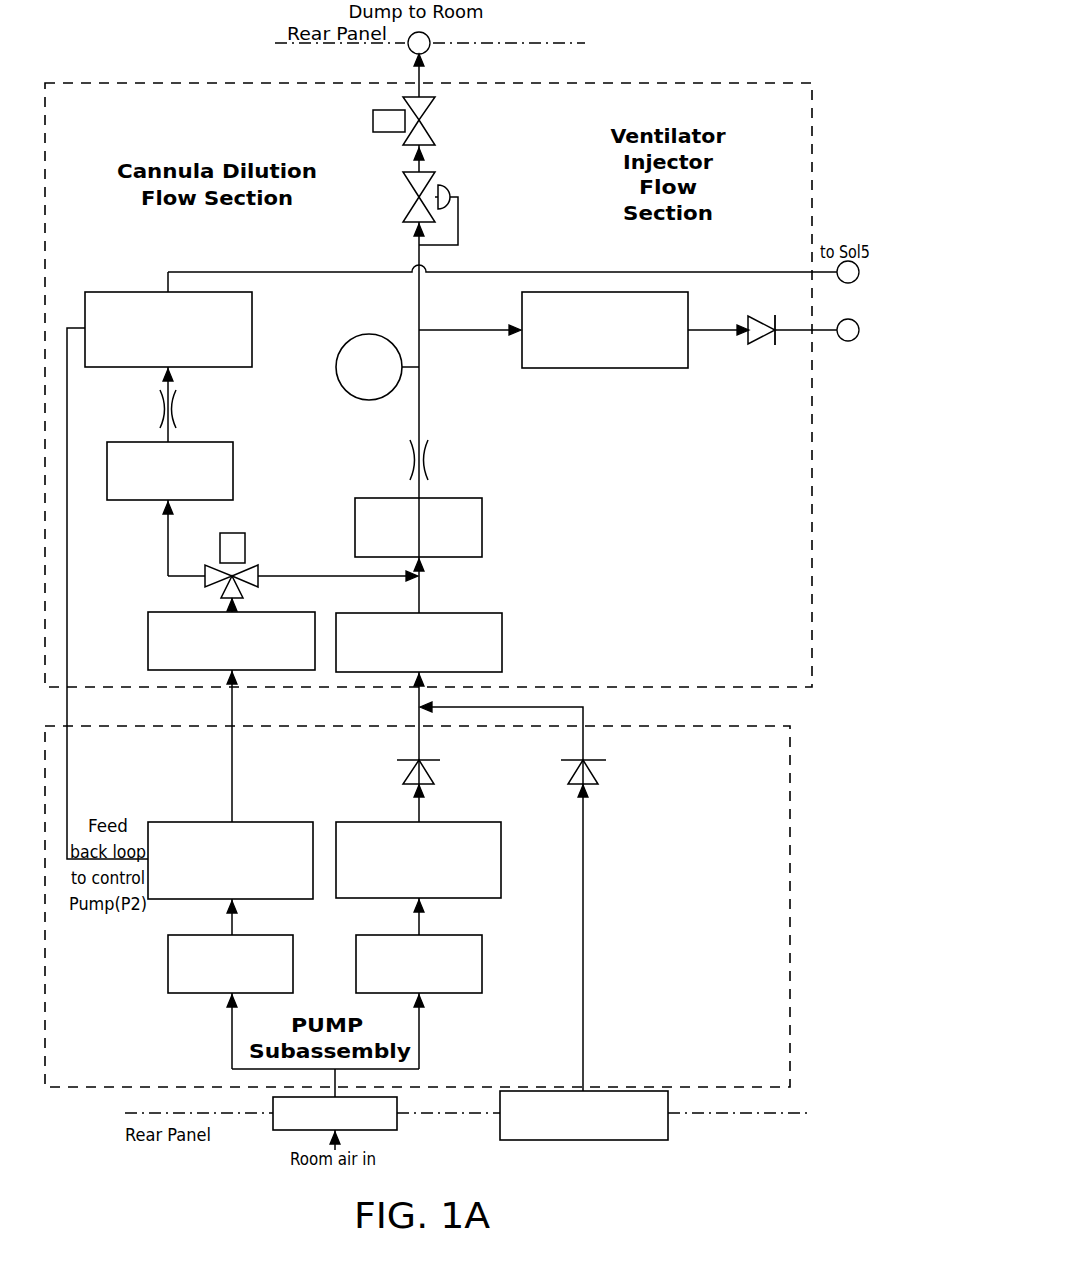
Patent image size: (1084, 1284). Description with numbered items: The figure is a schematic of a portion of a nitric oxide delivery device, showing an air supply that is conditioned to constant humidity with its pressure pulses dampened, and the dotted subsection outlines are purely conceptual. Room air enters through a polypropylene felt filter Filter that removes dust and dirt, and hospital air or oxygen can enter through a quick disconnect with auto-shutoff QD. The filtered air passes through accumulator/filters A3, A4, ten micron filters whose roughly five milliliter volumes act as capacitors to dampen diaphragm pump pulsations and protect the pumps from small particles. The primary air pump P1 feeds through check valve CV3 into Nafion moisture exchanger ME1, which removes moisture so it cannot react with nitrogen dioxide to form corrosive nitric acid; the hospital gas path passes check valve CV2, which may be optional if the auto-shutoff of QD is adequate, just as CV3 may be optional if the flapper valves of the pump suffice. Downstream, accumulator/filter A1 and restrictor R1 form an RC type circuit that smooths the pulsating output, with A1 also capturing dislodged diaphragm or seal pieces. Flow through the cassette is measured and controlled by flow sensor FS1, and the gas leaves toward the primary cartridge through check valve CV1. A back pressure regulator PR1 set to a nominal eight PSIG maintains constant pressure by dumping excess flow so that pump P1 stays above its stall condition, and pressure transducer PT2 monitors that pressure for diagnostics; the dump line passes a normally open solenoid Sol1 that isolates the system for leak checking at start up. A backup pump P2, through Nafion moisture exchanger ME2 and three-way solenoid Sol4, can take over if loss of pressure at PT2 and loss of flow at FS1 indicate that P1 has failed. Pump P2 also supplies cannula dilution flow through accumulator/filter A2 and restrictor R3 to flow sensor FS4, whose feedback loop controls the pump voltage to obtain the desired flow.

The solenoid 1 Sol1 is at (401, 134).
The back pressure regulator PR1 is at (485, 200).
The flow sensor 4 FS4 is at (168, 329).
The restrictor 3 R3 is at (124, 404).
The accumulator/filter 2 A2 is at (170, 471).
The solenoid 4 Sol4 is at (290, 556).
The Nafion moisture exchanger 2 ME2 is at (231, 717).
The Nafion moisture exchanger 1 ME1 is at (419, 717).
The accumulator/filter 1 A1 is at (418, 534).
The restrictor 1 R1 is at (474, 458).
The pressure transducer 2 PT2 is at (377, 367).
The flow sensor 1 FS1 is at (605, 330).
The check valve 1 CV1 is at (824, 355).
The check valve 3 CV3 is at (467, 775).
The check valve 2 CV2 is at (562, 896).
The backup pump P2 is at (230, 878).
The air pump P1 is at (418, 878).
The accumulator/filter 4 A4 is at (230, 1002).
The accumulator/filter 3 A3 is at (419, 1002).
The polypropylene felt filter Filter is at (335, 1123).
The quick disconnect with auto-shutoff QD is at (584, 1115).